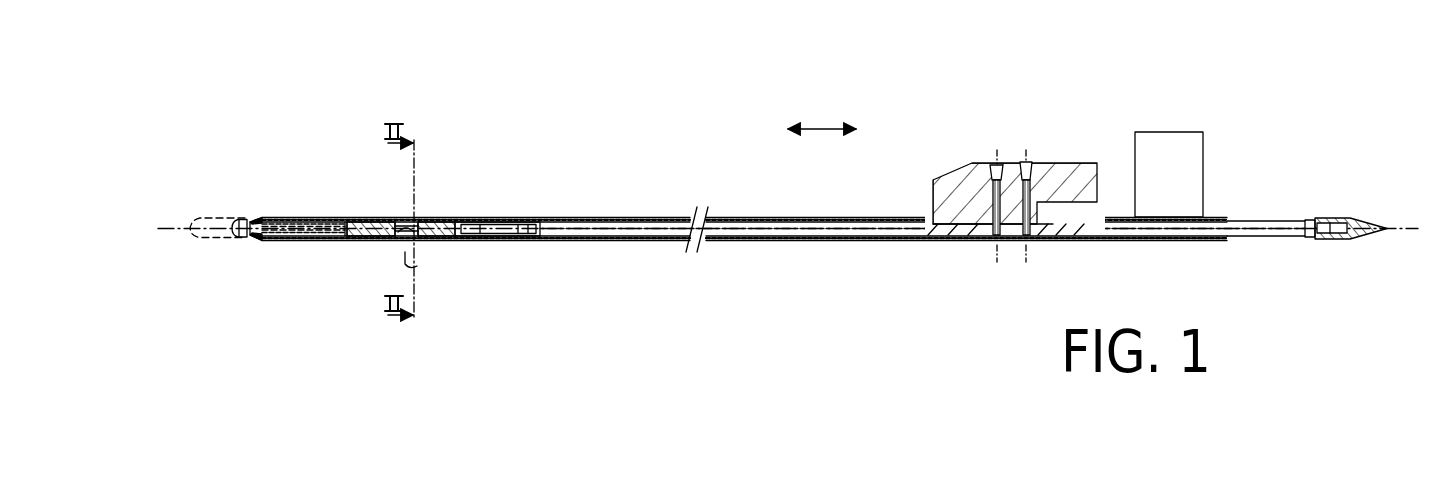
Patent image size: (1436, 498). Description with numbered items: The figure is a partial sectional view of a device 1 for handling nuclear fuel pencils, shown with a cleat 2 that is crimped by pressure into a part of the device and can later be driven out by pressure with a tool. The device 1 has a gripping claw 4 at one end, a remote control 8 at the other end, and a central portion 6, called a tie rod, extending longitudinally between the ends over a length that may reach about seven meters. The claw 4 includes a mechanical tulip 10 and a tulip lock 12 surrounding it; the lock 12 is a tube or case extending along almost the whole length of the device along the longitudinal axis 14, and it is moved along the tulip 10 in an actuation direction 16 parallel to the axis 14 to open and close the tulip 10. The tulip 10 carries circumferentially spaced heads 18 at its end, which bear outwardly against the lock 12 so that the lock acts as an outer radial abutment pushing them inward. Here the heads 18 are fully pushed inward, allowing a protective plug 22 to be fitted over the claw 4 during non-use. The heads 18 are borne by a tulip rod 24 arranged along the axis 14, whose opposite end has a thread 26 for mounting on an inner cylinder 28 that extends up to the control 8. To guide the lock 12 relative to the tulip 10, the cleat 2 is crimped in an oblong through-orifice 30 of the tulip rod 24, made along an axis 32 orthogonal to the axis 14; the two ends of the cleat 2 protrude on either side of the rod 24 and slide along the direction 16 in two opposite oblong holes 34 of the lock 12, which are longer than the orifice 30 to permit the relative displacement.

The device for handling nuclear fuel pencils 1 is at (473, 91).
The cleat 2 is at (402, 225).
The gripping claw 4 is at (247, 198).
The central portion (tie rod) 6 is at (672, 204).
The control of the claw 8 is at (1338, 199).
The mechanical tulip 10 is at (352, 236).
The tulip lock 12 is at (300, 221).
The longitudinal axis 14 is at (157, 222).
The actuation direction 16 is at (830, 128).
The heads 18 is at (283, 219).
The protective plug 22 is at (216, 238).
The tulip rod 24 is at (357, 240).
The thread 26 is at (531, 245).
The inner cylinder 28 is at (762, 222).
The through-orifice 30 is at (410, 238).
The axis 32 is at (418, 263).
The oblong holes 34 is at (364, 220).